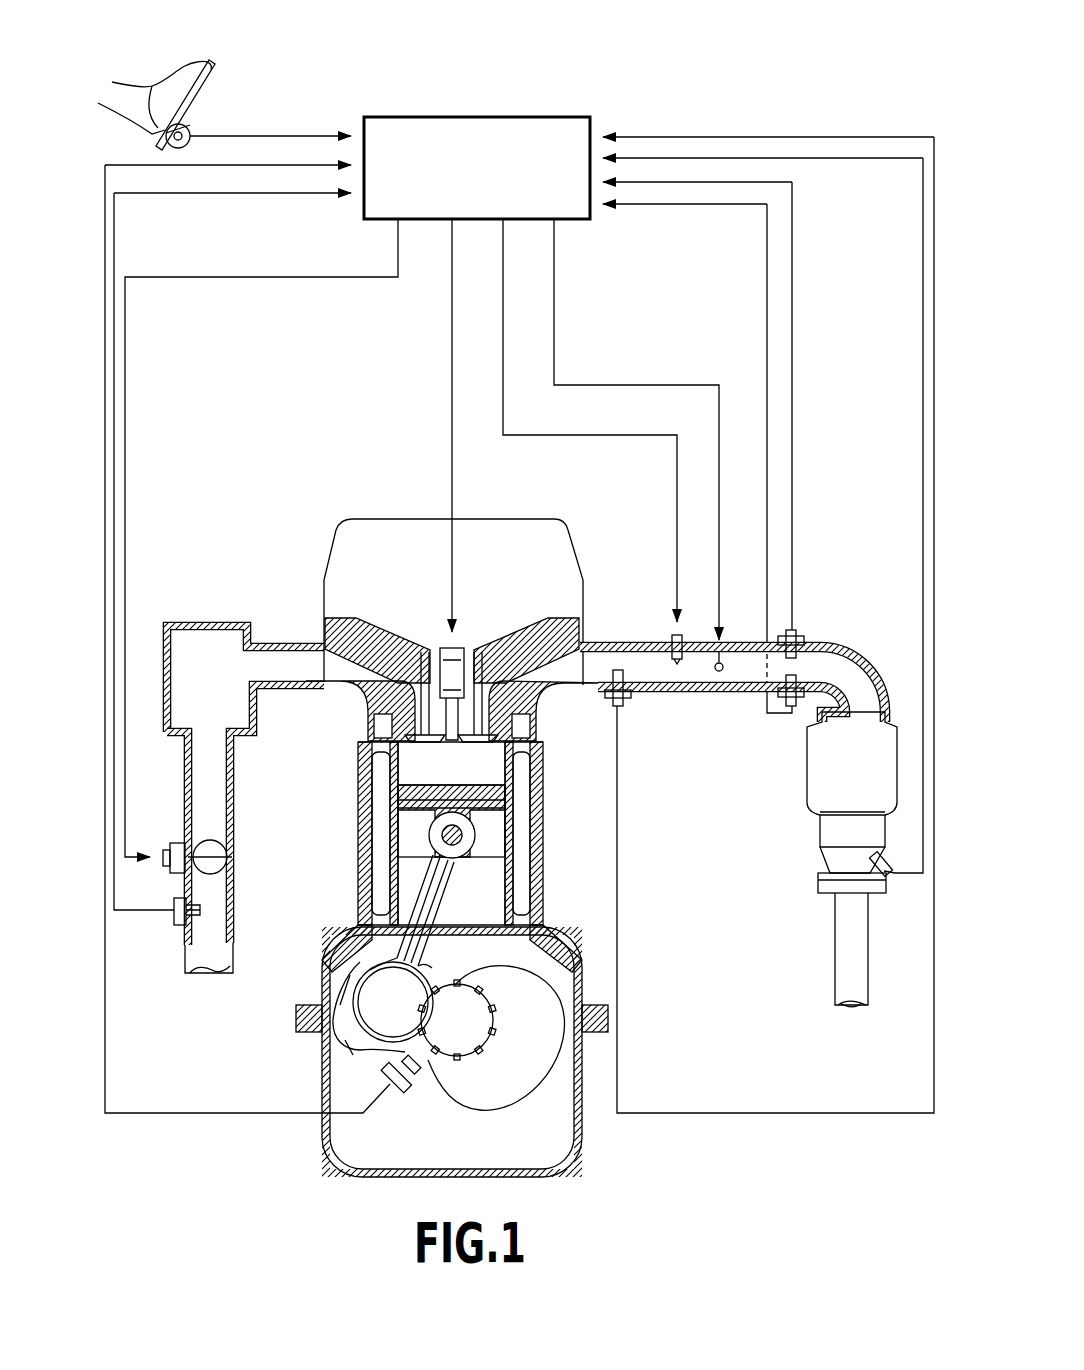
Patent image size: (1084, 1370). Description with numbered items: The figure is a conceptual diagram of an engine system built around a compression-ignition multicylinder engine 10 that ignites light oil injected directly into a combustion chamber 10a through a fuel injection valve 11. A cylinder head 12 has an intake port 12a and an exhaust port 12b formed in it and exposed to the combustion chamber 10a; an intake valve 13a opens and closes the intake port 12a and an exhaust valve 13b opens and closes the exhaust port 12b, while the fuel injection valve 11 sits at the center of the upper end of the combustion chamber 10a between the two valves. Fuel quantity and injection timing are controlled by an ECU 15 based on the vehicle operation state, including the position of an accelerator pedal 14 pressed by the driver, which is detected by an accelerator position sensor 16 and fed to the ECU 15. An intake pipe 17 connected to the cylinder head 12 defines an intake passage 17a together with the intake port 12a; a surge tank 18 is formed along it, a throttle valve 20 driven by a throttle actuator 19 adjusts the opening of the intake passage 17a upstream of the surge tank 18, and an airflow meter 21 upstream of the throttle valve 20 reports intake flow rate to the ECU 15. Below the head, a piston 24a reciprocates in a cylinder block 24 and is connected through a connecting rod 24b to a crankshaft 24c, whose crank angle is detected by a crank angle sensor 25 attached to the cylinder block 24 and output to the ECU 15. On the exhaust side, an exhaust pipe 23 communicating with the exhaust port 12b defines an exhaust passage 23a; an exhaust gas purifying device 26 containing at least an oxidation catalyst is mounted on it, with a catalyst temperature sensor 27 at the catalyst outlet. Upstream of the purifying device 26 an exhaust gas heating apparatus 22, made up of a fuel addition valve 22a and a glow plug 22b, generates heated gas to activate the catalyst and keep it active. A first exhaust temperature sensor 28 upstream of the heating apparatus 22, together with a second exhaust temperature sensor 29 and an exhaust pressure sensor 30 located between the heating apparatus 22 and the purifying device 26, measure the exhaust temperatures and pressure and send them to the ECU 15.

The engine 10 is at (235, 1030).
The combustion chamber 10a is at (492, 770).
The fuel injection valve 11 is at (460, 690).
The cylinder head 12 is at (451, 592).
The intake port 12a is at (355, 660).
The exhaust port 12b is at (552, 666).
The intake valve 13a is at (405, 735).
The exhaust valve 13b is at (500, 735).
The accelerator pedal 14 is at (199, 89).
The ECU 15 is at (485, 117).
The accelerator position sensor 16 is at (192, 122).
The intake pipe 17 is at (230, 748).
The intake passage 17a is at (282, 660).
The surge tank 18 is at (207, 623).
The throttle actuator 19 is at (180, 845).
The throttle valve 20 is at (212, 848).
The airflow meter 21 is at (212, 940).
The exhaust gas heating apparatus 22 is at (750, 772).
The fuel addition valve 22a is at (680, 690).
The glow plug 22b is at (722, 675).
The exhaust pipe 23 is at (843, 948).
The exhaust passage 23a is at (835, 662).
The cylinder block 24 is at (548, 918).
The piston 24a is at (505, 822).
The connecting rod 24b is at (430, 885).
The crankshaft 24c is at (468, 1030).
The crank angle sensor 25 is at (412, 1078).
The exhaust gas purifying device 26 is at (855, 740).
The catalyst temperature sensor 27 is at (885, 874).
The first exhaust temperature sensor 28 is at (620, 668).
The second exhaust temperature sensor 29 is at (800, 630).
The exhaust pressure sensor 30 is at (793, 710).